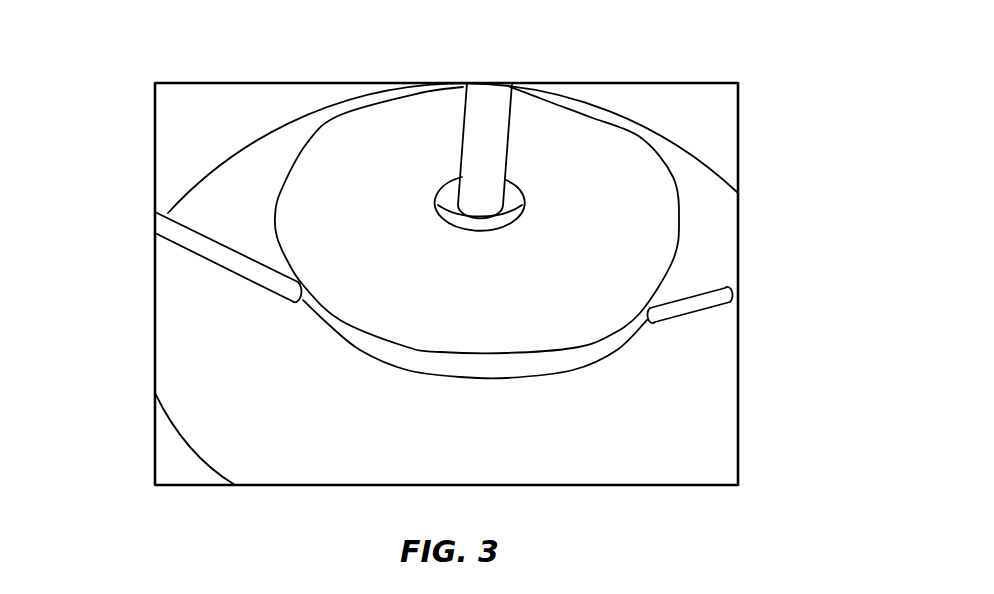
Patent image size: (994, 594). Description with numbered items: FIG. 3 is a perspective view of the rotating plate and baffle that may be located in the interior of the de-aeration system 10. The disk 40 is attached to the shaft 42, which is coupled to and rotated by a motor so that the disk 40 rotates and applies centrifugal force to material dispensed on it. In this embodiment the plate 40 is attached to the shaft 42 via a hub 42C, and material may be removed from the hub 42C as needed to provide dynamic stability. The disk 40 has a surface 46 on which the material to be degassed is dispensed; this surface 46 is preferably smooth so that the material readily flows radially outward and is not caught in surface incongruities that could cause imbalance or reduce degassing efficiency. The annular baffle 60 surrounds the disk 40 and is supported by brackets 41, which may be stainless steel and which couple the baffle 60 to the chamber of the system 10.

The de-aeration system 10 is at (813, 75).
The disk 40 is at (618, 447).
The brackets 41 is at (213, 247).
The shaft 42 is at (500, 122).
The hub 42C is at (440, 227).
The disk surface 46 is at (688, 383).
The annular baffle 60 is at (647, 177).